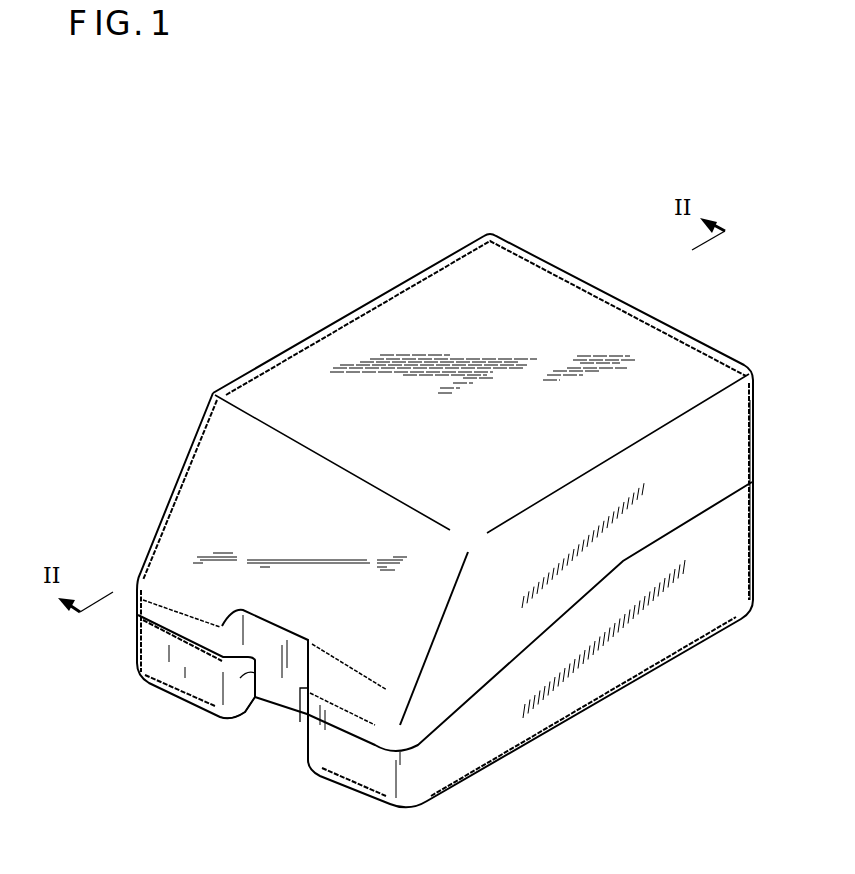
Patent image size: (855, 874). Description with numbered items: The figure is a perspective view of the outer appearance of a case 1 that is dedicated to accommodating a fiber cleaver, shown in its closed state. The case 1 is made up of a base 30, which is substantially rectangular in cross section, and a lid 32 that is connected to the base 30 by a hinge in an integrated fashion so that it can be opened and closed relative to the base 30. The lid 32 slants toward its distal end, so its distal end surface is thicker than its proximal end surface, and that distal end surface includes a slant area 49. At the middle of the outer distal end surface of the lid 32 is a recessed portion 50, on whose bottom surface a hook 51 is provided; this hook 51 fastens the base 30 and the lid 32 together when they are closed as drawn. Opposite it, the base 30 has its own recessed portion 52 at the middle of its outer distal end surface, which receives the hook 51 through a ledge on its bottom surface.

The case 1 is at (331, 181).
The base 30 is at (638, 660).
The lid 32 is at (357, 335).
The slant area 49 is at (197, 489).
The recessed portion 50 is at (285, 657).
The hook 51 is at (287, 713).
The recessed portion 52 is at (250, 707).